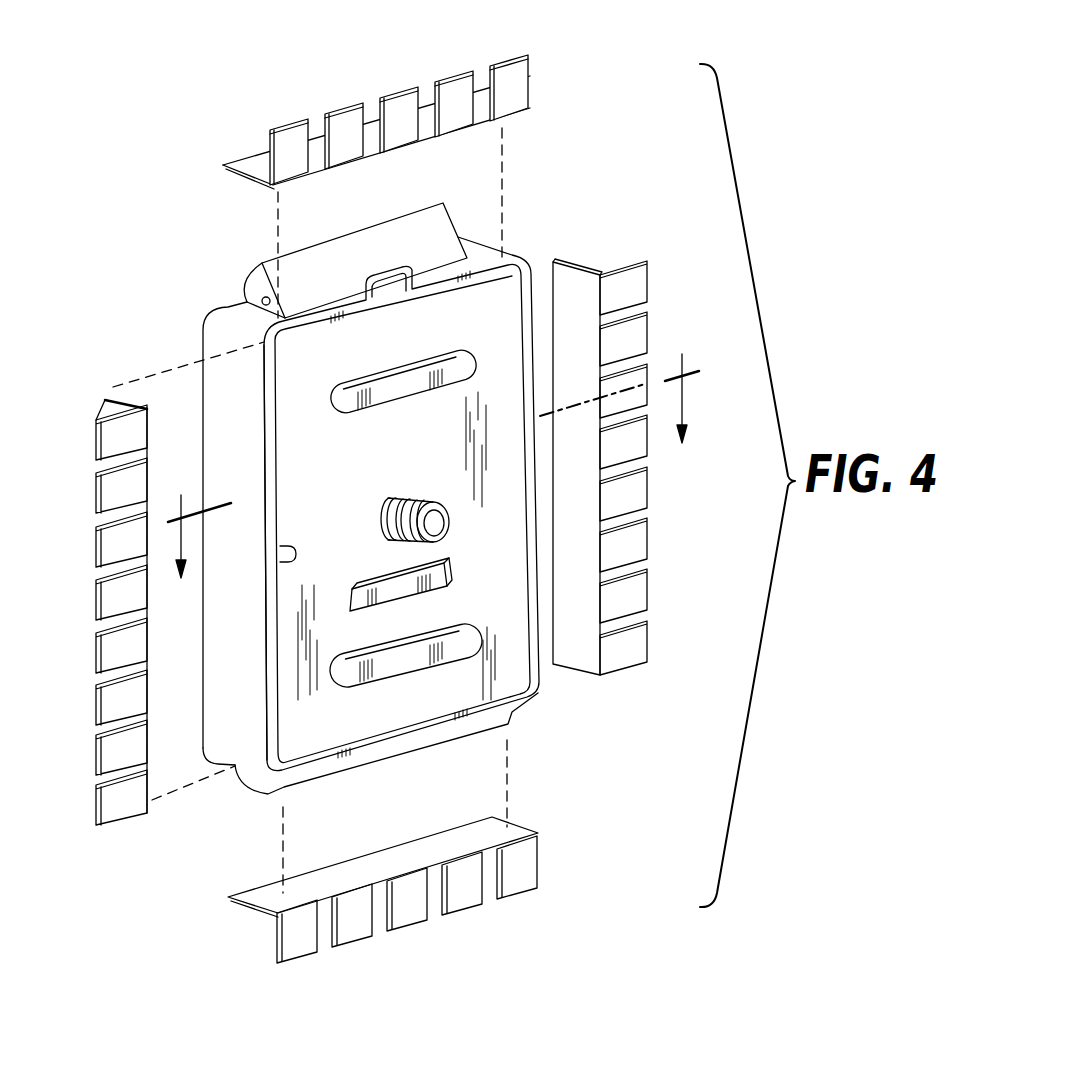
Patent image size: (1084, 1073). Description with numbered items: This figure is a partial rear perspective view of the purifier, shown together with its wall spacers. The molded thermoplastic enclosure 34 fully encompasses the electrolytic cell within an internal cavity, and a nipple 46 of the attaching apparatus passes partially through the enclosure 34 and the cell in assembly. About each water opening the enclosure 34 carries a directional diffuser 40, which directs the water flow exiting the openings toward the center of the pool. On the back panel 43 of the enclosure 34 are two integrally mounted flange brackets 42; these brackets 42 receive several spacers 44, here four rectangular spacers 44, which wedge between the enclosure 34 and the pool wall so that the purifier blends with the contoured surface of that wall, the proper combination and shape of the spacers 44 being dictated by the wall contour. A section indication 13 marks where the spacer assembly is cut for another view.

The section line 13- 13 is at (431, 486).
The enclosure 34 is at (202, 328).
The directional diffuser 40 is at (428, 227).
The flange bracket 42 is at (458, 365).
The back panel 43 is at (360, 715).
The spacer 44 is at (235, 173).
The nipple 46 is at (427, 497).